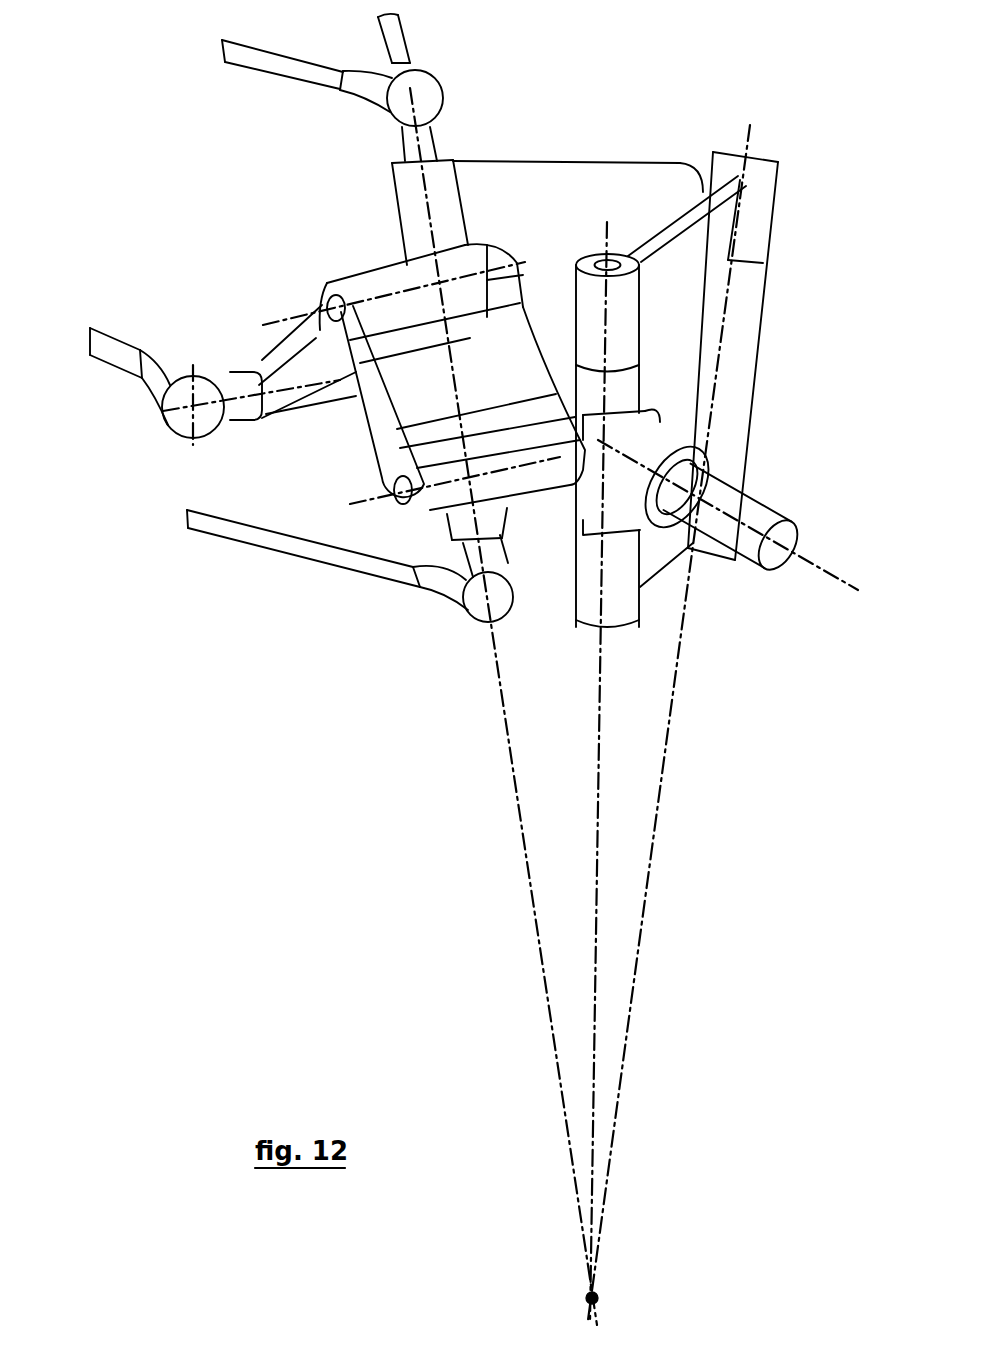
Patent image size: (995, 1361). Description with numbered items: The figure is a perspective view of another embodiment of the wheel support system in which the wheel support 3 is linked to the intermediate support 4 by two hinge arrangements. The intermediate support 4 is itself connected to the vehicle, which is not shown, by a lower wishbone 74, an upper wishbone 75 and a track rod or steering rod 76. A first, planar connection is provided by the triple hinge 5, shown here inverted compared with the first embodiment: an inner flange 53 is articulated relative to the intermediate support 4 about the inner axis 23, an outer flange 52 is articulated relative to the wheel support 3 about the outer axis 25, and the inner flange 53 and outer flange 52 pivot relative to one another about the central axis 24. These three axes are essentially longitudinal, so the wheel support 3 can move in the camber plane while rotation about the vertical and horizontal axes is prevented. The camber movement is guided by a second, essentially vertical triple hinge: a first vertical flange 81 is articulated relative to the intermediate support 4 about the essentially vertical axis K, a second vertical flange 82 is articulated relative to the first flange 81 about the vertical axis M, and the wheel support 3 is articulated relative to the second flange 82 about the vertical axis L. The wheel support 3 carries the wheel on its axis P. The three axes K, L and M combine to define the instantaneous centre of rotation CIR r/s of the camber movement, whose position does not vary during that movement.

The wheel support 3 is at (650, 437).
The intermediate support 4 is at (427, 143).
The triple hinge 5 is at (314, 240).
The inner axis 23 is at (152, 415).
The central axis 24 is at (288, 316).
The outer axis 25 is at (370, 498).
The outer flange 52 is at (377, 420).
The inner flange 53 is at (270, 358).
The lower wishbone 74 is at (310, 545).
The upper wishbone 75 is at (370, 85).
The steering rod 76 is at (110, 357).
The first vertical flange 81 is at (562, 203).
The second vertical flange 82 is at (692, 250).
The axis K is at (500, 697).
The axis L is at (600, 750).
The axis M is at (657, 813).
The wheel axis P is at (808, 562).
The instantaneous centre of rotation CIR is at (600, 1300).